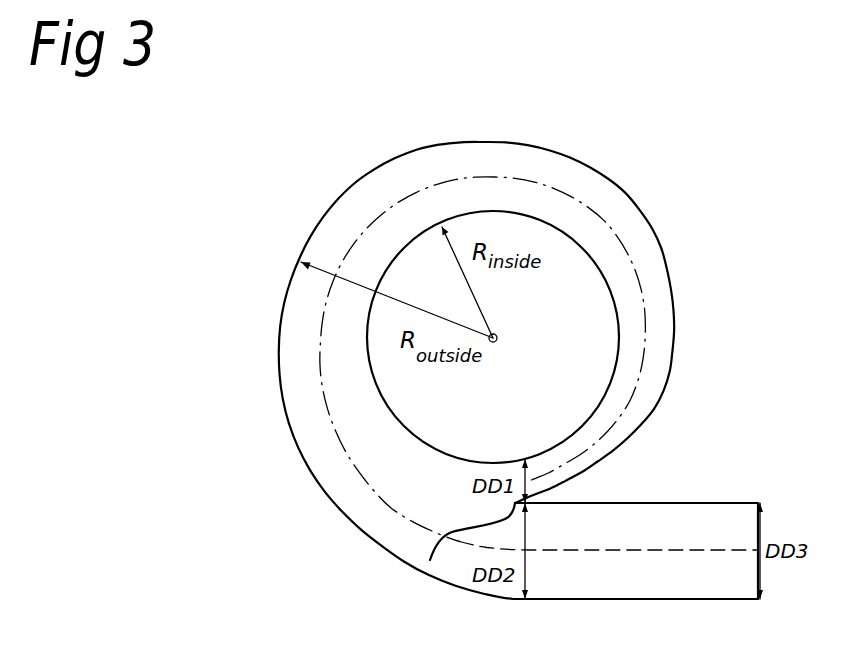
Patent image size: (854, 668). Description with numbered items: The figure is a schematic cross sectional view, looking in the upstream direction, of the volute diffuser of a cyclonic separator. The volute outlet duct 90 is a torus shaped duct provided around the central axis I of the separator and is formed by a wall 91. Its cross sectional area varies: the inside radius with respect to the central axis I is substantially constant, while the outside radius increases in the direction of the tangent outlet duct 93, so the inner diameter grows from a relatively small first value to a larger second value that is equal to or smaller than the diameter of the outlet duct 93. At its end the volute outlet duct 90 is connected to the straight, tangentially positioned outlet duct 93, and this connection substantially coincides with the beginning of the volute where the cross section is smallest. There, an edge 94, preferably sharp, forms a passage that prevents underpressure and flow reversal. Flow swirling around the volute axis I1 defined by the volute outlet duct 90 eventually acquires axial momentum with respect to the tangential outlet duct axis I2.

The volute outlet duct 90 is at (656, 302).
The wall 91 is at (652, 231).
The outlet duct 93 is at (700, 533).
The edge 94 is at (430, 560).
The central axis I is at (498, 338).
The volute axis I1 is at (577, 200).
The tangential outlet duct axis I2 is at (722, 550).